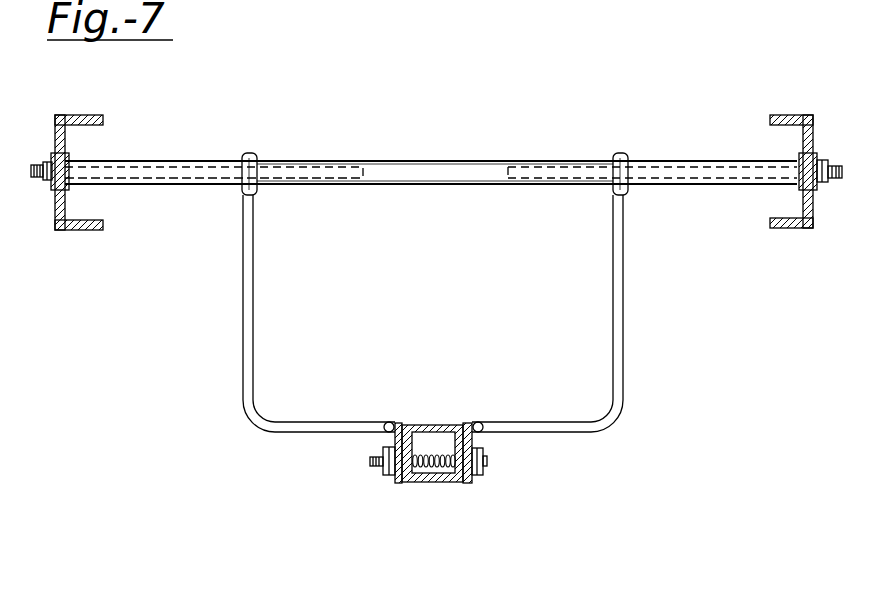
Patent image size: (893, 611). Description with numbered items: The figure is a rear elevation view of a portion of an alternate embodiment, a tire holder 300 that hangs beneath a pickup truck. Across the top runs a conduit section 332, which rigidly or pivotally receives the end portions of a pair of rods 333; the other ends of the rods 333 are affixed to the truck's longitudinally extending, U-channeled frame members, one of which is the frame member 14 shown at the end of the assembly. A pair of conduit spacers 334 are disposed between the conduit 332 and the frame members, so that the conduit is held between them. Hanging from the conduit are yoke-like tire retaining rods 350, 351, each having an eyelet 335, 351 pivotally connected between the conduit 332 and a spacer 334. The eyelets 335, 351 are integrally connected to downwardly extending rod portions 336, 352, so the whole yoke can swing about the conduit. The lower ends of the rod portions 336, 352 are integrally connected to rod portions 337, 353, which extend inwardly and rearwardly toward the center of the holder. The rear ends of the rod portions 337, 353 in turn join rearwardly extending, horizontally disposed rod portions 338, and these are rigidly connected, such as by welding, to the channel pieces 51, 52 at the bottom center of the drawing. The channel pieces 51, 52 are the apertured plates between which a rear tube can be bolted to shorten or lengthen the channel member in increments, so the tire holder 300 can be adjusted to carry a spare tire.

The tire holder 300 is at (228, 410).
The frame member 14 is at (785, 115).
The conduit section 332 is at (423, 160).
The rods 333 is at (535, 165).
The conduit spacers 334 is at (690, 160).
The eyelet 335 is at (620, 153).
The tire retaining rod eyelet 351 is at (246, 153).
The tire retaining rod 350 is at (255, 328).
The downwardly extending rod portion 352 is at (243, 367).
The downwardly extending rod portion 336 is at (625, 308).
The inwardly and rearwardly extending rod portion 353 is at (323, 422).
The inwardly and rearwardly extending rod portion 337 is at (535, 433).
The horizontally disposed rod portions 338 is at (390, 425).
The channel piece 51 is at (390, 478).
The channel piece 52 is at (475, 478).